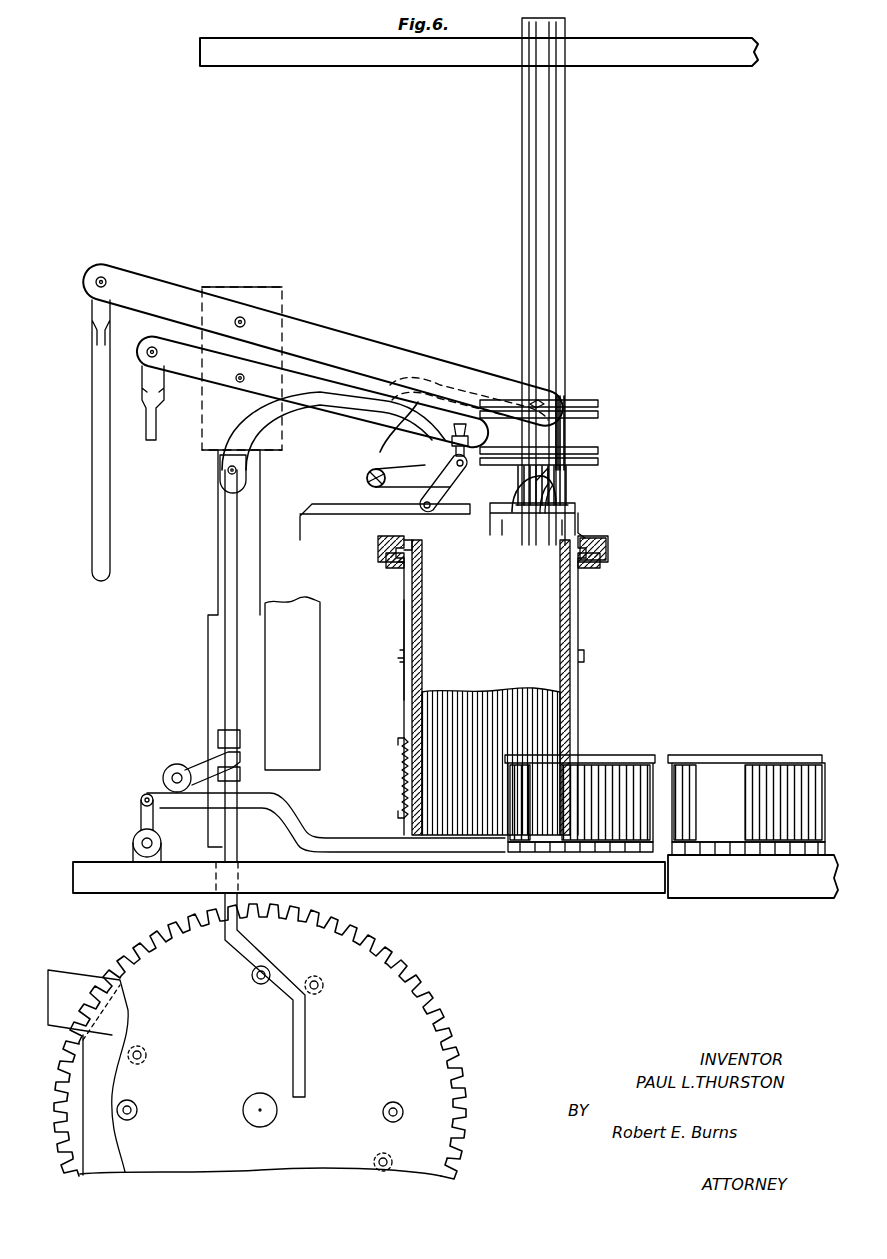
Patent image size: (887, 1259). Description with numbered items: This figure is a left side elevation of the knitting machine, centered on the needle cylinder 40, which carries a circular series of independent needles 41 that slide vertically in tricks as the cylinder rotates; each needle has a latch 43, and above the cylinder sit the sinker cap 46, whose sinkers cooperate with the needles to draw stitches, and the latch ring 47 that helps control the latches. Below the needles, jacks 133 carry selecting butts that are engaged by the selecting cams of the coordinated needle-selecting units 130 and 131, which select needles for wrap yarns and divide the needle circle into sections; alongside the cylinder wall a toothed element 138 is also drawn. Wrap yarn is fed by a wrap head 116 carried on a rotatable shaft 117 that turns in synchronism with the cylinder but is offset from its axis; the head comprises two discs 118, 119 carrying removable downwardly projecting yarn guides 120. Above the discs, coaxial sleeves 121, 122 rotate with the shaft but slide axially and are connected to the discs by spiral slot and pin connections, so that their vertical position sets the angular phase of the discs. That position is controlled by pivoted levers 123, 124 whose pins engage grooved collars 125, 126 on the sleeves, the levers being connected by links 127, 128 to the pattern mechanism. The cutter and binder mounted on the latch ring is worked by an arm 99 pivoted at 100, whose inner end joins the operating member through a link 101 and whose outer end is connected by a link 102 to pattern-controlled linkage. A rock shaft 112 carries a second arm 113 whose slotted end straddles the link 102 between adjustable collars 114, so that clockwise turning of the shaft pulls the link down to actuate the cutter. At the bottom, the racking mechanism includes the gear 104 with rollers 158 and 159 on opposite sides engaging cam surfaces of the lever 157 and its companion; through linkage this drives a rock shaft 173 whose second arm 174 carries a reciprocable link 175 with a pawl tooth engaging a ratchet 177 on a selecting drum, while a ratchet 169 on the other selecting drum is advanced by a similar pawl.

The rotatable shaft 117 is at (552, 284).
The pivoted lever 123 is at (362, 345).
The link 127 is at (108, 533).
The link 128 is at (158, 432).
The arm 99 is at (360, 415).
The pivoted lever 124 is at (398, 412).
The pivot 100 is at (367, 478).
The link 101 is at (448, 482).
The yarn guides 120 is at (490, 524).
The grooved collar 125 is at (584, 400).
The grooved collar 126 is at (598, 453).
The sleeve 121 is at (564, 434).
The sleeve 122 is at (572, 482).
The wrap head 116 is at (576, 496).
The disc 118 is at (516, 518).
The disc 119 is at (544, 520).
The latch 43 is at (582, 524).
The sinker cap 46 is at (378, 548).
The latch ring 47 is at (396, 566).
The needle cylinder 40 is at (423, 632).
The needles 41 is at (410, 608).
The jacks 133 is at (410, 704).
The spring 138 is at (402, 760).
The needle-selecting unit 130 is at (618, 749).
The needle-selecting unit 131 is at (761, 749).
The ratchet 177 is at (612, 852).
The ratchet 169 is at (742, 855).
The reciprocable link 175 is at (282, 812).
The second arm 174 is at (140, 815).
The rock shaft 173 is at (133, 843).
The link 102 is at (232, 640).
The adjustable collars 114 is at (240, 768).
The second arm 113 is at (196, 760).
The rock shaft 112 is at (162, 776).
The gear 104 is at (436, 1006).
The lever 157 is at (125, 1018).
The roller 158 is at (146, 1060).
The roller 159 is at (135, 1114).